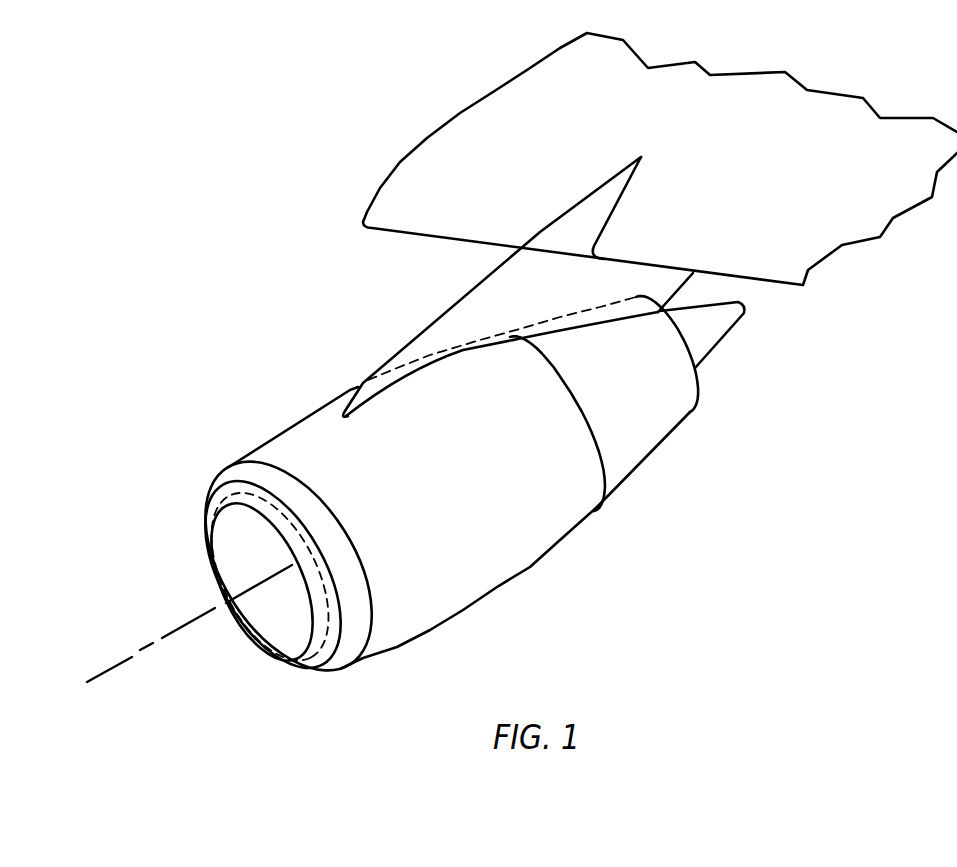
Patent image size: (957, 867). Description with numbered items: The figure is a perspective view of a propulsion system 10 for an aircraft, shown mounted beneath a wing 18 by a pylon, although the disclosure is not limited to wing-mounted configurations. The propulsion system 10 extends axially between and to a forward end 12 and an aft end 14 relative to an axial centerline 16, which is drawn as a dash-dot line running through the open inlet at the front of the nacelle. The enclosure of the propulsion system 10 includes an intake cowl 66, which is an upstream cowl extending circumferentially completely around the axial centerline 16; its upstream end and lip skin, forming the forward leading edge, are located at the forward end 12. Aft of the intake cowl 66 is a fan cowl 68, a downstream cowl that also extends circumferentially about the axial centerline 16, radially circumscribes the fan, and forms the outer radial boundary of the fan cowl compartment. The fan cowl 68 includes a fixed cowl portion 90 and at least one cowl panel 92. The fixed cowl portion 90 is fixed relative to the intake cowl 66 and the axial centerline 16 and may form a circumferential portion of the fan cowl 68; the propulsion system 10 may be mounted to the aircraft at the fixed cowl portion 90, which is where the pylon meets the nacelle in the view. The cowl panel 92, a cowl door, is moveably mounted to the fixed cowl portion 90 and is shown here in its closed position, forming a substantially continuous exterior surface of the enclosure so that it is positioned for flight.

The propulsion system 10 is at (275, 328).
The forward end 12 is at (280, 678).
The aft end 14 is at (770, 338).
The axial centerline 16 is at (100, 676).
The wing 18 is at (467, 130).
The intake cowl 66 is at (222, 467).
The fan cowl 68 is at (523, 587).
The fixed cowl portion 90 is at (310, 448).
The cowl panel 92 is at (547, 515).